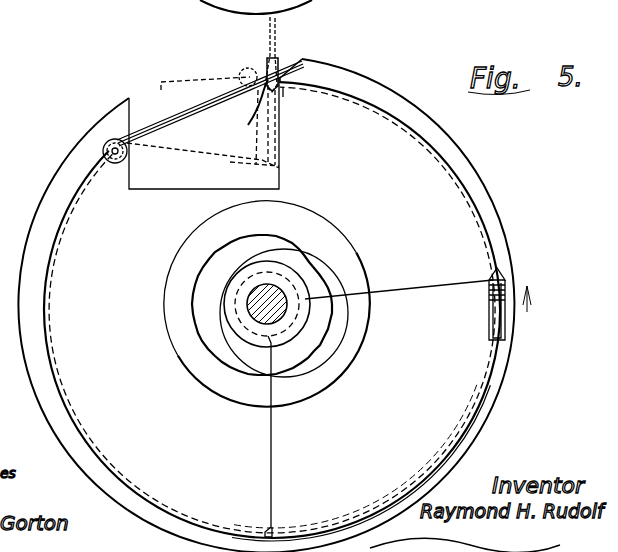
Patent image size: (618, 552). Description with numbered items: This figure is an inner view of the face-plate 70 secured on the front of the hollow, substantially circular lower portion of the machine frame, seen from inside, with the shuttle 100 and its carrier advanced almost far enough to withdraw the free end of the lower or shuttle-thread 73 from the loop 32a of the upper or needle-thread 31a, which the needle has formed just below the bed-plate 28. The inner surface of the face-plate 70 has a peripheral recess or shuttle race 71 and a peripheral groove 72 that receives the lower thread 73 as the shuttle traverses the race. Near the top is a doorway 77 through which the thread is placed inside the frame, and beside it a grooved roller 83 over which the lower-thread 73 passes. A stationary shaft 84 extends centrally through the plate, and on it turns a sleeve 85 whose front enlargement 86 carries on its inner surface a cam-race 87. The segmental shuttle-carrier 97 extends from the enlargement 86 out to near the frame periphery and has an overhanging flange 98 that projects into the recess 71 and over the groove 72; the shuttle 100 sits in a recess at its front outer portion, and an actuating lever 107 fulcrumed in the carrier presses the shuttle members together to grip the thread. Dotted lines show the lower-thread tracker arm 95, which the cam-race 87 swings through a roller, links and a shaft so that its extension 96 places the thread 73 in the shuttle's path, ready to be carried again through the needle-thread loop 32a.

The bed-plate 28 is at (318, 62).
The upper or needle-thread 31a is at (276, 36).
The loop of the needle-thread 32a is at (268, 72).
The face-plate 70 is at (272, 310).
The shuttle race 71 is at (484, 202).
The peripheral groove 72 is at (450, 175).
The lower or shuttle-thread 73 is at (205, 112).
The doorway 77 is at (186, 180).
The grooved roller 83 is at (113, 163).
The stationary shaft 84 is at (252, 292).
The sleeve 85 is at (303, 330).
The enlargement 86 is at (340, 228).
The cam-race 87 is at (322, 366).
The lower-thread tracker arm 95 is at (280, 132).
The extension 96 is at (160, 88).
The shuttle-carrier 97 is at (271, 457).
The overhanging flange 98 is at (266, 534).
The shuttle 100 is at (499, 271).
The actuating lever 107 is at (494, 317).